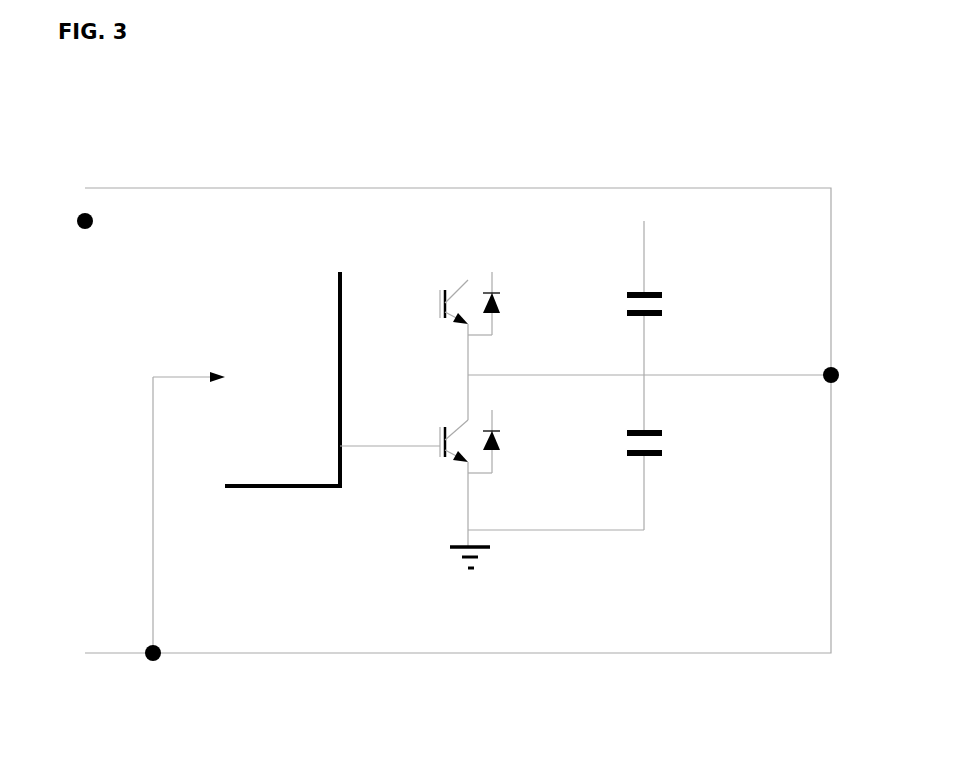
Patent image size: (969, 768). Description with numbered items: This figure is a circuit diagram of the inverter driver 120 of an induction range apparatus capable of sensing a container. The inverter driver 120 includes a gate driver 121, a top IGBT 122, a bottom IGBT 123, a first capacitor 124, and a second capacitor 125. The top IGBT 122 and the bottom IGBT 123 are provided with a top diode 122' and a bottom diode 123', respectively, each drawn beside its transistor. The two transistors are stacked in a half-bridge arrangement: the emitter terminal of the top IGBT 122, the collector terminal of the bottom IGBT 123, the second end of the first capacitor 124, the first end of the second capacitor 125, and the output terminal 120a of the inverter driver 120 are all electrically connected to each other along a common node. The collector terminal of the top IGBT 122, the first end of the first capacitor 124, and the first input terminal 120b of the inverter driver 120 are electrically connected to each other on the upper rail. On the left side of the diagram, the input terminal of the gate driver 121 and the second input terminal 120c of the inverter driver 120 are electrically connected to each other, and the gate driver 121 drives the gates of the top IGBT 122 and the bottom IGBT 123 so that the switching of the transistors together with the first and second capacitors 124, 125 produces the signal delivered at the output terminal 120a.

The inverter driver 120 is at (458, 401).
The output terminal 120a is at (825, 381).
The first input terminal 120b is at (93, 227).
The second input terminal 120c is at (153, 665).
The gate driver 121 is at (222, 323).
The top IGBT 122 is at (429, 317).
The top diode 122' is at (537, 303).
The bottom IGBT 123 is at (505, 471).
The bottom diode 123' is at (537, 442).
The first capacitor 124 is at (665, 300).
The second capacitor 125 is at (665, 440).